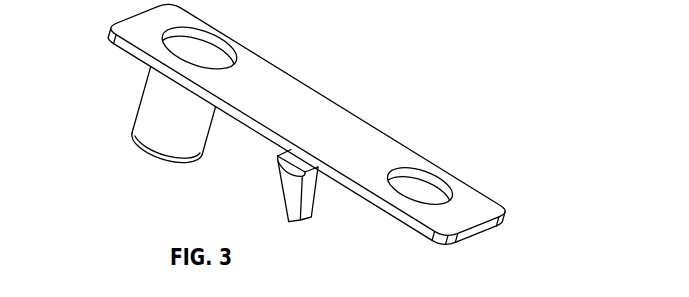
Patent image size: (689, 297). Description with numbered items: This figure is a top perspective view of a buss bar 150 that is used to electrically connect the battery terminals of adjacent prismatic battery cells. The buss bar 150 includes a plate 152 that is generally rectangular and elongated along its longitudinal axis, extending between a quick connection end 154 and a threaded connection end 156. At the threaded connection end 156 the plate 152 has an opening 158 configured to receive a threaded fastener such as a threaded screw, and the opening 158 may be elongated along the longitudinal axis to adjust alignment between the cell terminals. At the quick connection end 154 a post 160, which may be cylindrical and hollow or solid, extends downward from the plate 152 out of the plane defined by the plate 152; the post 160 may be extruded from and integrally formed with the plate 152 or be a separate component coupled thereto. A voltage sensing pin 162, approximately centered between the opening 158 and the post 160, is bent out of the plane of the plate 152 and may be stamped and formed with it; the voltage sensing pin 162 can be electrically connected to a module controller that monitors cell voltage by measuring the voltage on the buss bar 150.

The buss bar 150 is at (367, 21).
The plate 152 is at (337, 113).
The quick connection end 154 is at (95, 35).
The threaded connection end 156 is at (520, 204).
The opening 158 is at (437, 174).
The post 160 is at (142, 126).
The voltage sensing pin 162 is at (310, 205).